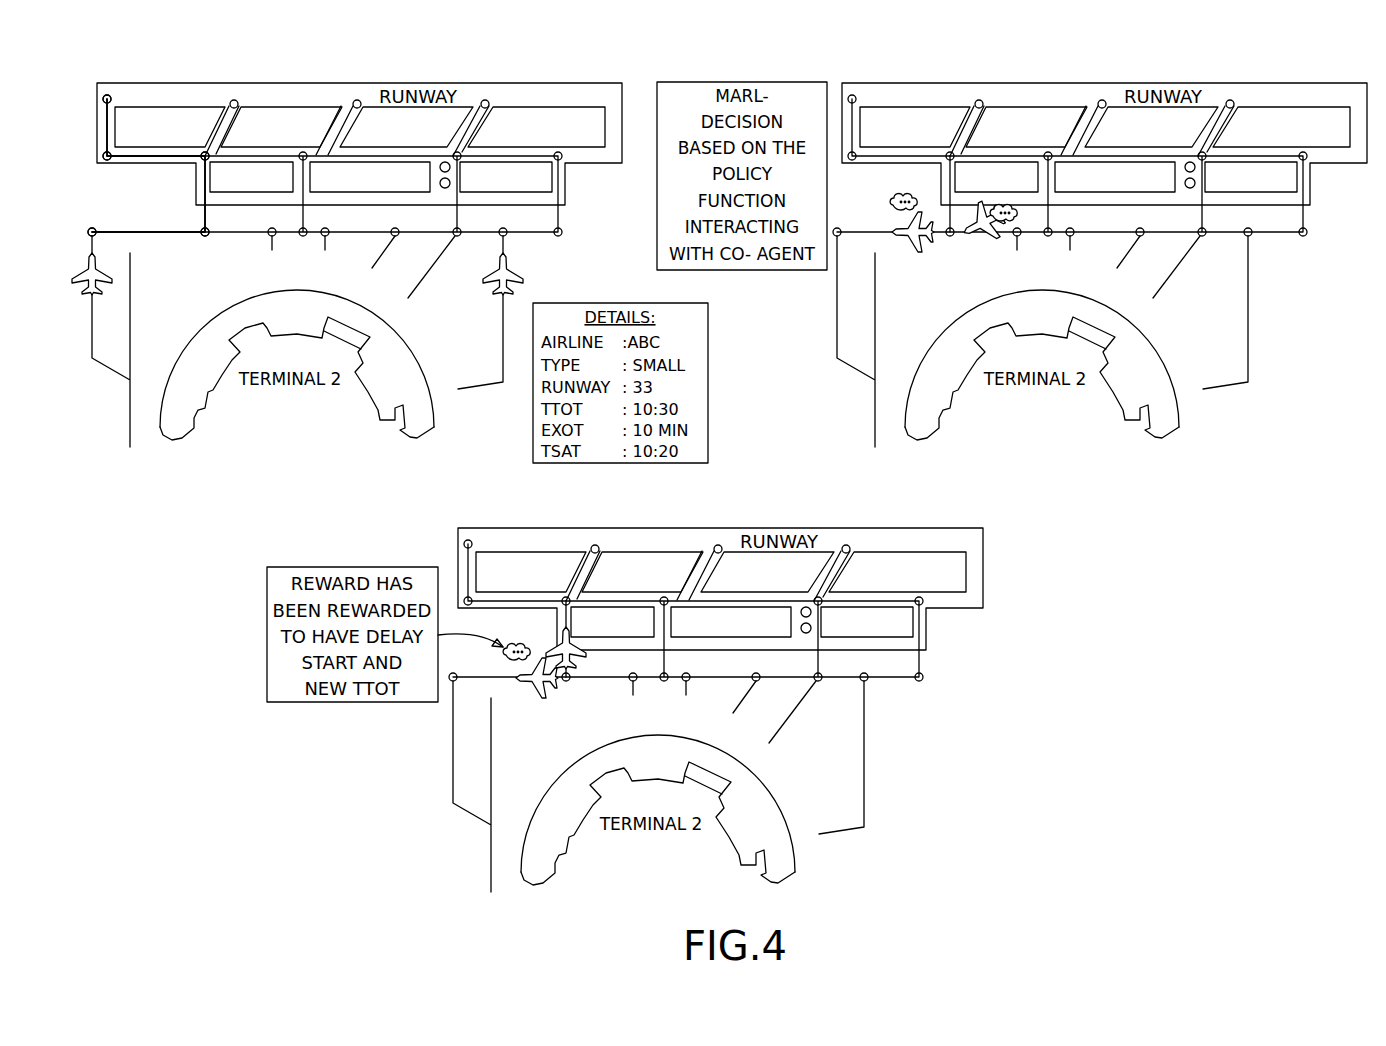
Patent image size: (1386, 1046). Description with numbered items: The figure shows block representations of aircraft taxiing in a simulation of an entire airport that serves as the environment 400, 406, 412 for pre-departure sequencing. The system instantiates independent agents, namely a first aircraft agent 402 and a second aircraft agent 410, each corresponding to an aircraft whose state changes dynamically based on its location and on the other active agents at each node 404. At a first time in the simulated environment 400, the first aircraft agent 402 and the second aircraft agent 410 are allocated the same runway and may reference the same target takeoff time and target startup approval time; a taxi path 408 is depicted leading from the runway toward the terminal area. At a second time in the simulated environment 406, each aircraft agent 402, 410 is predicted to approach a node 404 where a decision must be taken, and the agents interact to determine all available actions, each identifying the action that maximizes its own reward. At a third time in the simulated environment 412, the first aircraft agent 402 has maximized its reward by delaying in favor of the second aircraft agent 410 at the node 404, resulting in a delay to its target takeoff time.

The environment 400 is at (368, 68).
The first aircraft agent 402 is at (112, 283).
The node 404 is at (205, 237).
The environment 406 is at (1110, 68).
The taxi path 408 is at (112, 98).
The second aircraft agent 410 is at (487, 282).
The environment 412 is at (729, 515).